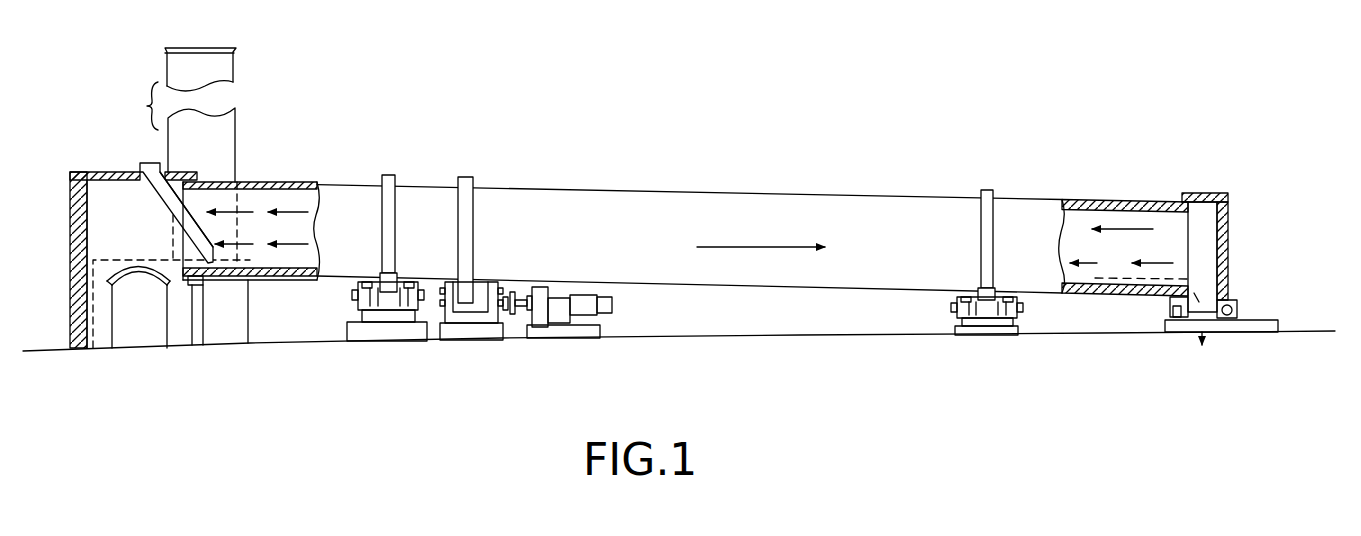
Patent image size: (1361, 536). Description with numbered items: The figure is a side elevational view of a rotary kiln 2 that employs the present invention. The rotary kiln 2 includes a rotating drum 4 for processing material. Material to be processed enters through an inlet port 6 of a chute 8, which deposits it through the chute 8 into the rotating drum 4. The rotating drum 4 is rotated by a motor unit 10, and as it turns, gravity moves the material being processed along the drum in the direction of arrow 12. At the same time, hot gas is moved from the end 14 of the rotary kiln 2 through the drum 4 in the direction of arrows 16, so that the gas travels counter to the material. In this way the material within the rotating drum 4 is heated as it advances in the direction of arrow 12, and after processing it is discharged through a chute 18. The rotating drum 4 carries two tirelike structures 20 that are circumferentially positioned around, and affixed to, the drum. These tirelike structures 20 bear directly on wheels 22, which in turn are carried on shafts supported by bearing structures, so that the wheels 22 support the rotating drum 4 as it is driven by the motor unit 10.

The rotary kiln 2 is at (300, 405).
The rotating drum 4 is at (770, 205).
The inlet port 6 is at (150, 164).
The chute 8 is at (160, 199).
The motor unit 10 is at (610, 313).
The arrow 12 is at (697, 248).
The end 14 is at (1208, 227).
The arrows 16 is at (298, 212).
The chute 18 is at (1208, 307).
The tirelike structures 20 is at (390, 175).
The wheels 22 is at (392, 292).